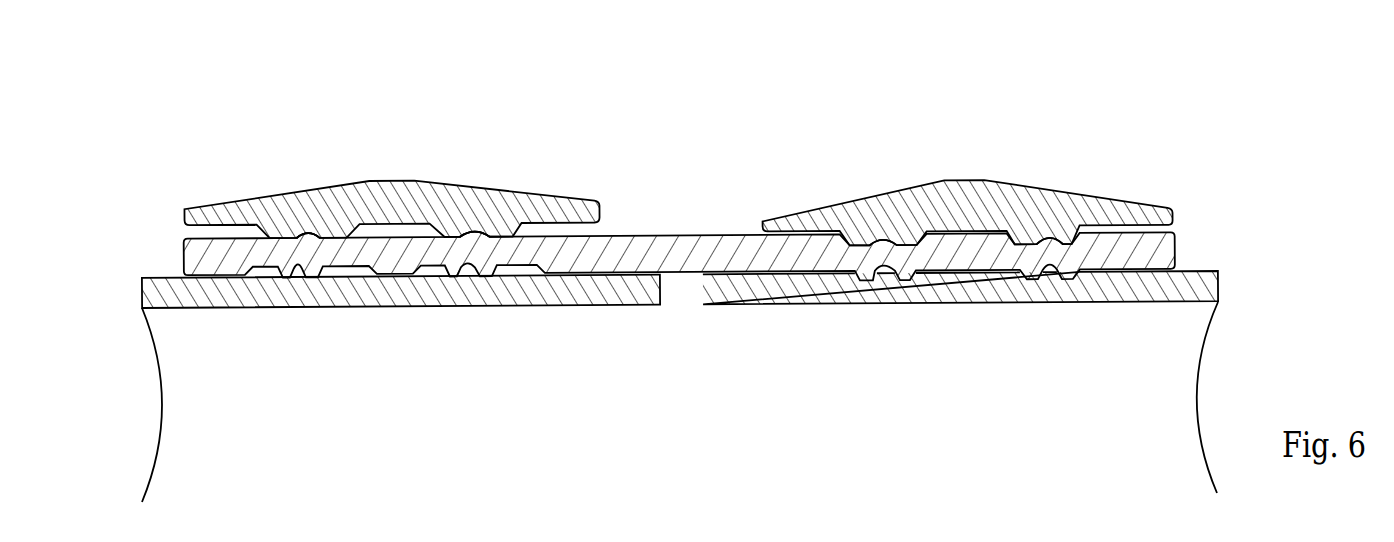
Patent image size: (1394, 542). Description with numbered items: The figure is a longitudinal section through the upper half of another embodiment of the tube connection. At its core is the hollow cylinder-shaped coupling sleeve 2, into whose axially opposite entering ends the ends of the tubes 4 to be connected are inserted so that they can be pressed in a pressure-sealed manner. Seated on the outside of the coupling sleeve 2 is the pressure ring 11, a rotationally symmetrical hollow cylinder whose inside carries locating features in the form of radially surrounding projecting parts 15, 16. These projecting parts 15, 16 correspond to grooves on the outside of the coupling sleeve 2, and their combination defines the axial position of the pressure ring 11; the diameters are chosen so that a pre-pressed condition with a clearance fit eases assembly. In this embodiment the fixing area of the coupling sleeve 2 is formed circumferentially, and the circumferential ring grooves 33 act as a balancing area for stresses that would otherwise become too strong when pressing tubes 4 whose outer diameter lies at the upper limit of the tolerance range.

The coupling sleeve 2 is at (1139, 250).
The tube 4 is at (155, 296).
The pressure ring 11 is at (965, 203).
The projecting part 15 is at (320, 228).
The projecting part 16 is at (451, 228).
The circumferential ring groove 33 is at (297, 233).